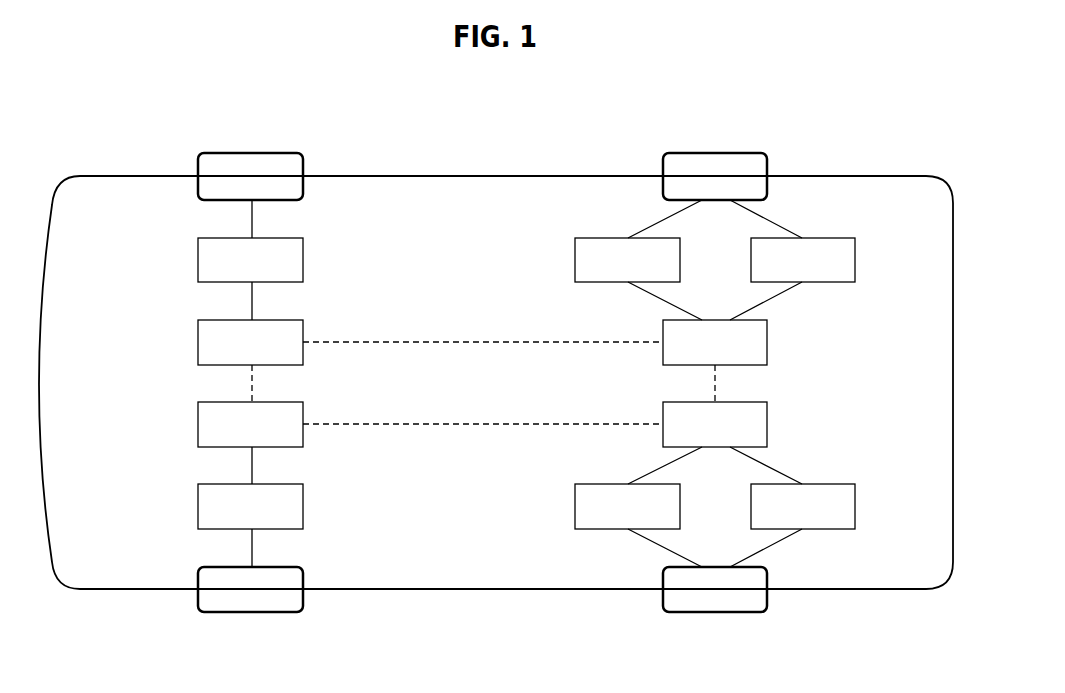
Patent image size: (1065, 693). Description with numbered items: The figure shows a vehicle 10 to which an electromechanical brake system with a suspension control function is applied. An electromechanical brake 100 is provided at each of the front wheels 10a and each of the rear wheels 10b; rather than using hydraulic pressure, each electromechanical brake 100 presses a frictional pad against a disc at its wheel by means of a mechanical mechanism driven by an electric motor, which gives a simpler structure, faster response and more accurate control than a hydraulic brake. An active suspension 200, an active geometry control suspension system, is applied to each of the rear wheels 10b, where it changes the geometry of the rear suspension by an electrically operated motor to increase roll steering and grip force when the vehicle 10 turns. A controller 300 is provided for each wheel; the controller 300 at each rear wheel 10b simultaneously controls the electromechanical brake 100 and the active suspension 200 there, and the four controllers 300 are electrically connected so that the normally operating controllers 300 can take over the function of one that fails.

The vehicle 10 is at (108, 170).
The front wheel 10a is at (248, 153).
The rear wheel 10b is at (713, 153).
The electromechanical brake 100 is at (303, 262).
The active suspension 200 is at (855, 258).
The controller 300 is at (303, 322).